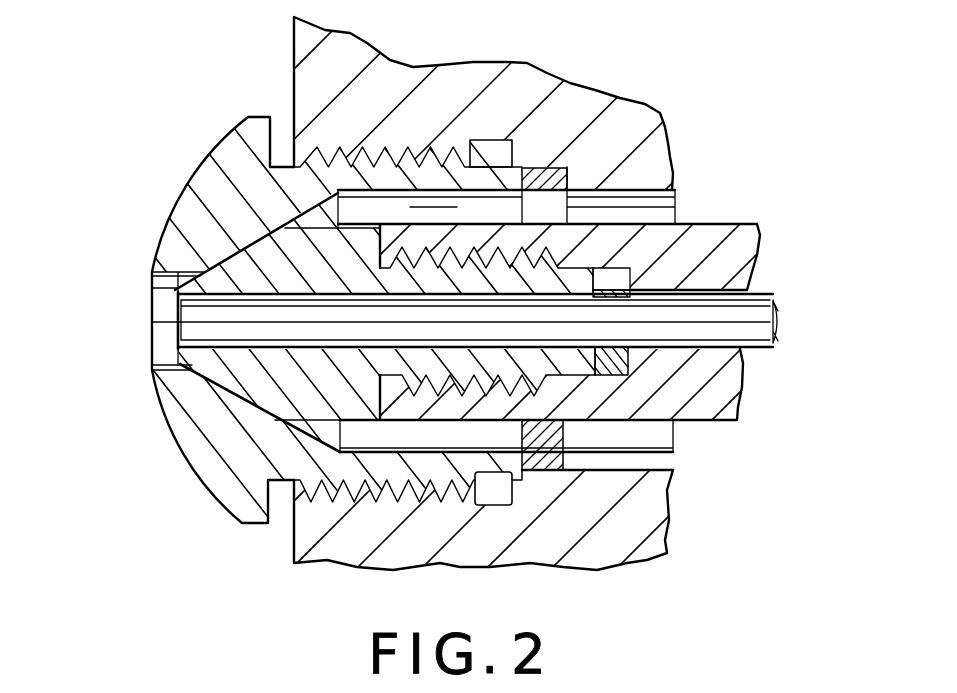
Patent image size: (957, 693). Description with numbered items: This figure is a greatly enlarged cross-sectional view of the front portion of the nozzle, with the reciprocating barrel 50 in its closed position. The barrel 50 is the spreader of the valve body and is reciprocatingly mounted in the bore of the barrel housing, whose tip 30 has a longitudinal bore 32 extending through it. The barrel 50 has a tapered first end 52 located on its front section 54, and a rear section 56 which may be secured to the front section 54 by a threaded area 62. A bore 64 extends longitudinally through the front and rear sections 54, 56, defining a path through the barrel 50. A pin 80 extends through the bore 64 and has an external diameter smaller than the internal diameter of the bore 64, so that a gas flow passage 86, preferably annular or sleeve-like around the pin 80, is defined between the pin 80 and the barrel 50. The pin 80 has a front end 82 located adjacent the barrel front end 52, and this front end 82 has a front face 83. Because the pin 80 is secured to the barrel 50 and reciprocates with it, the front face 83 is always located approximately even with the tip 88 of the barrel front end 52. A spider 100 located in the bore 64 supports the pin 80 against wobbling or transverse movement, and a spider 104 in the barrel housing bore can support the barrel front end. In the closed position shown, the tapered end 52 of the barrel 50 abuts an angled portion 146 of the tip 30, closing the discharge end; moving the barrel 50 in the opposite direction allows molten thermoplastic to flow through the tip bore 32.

The tip 30 is at (199, 147).
The longitudinal bore 32 is at (150, 292).
The barrel 50 is at (723, 224).
The tapered first end 52 is at (247, 230).
The front section 54 is at (338, 208).
The rear section 56 is at (718, 398).
The threaded area 62 is at (528, 268).
The bore 64 is at (345, 340).
The pin 80 is at (773, 343).
The front end 82 is at (280, 330).
The front face 83 is at (173, 330).
The gas flow passage 86 is at (747, 295).
The tip 88 is at (173, 357).
The spider 100 is at (618, 352).
The spider 104 is at (545, 452).
The angled portion 146 is at (247, 248).